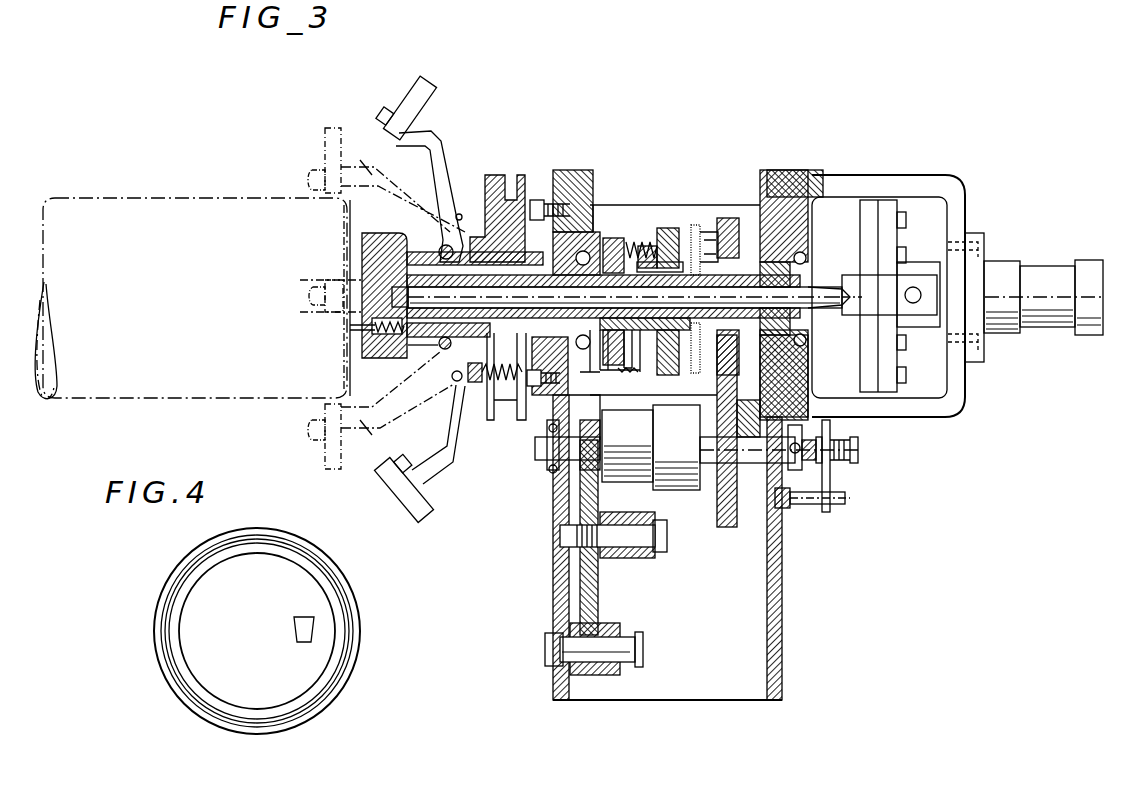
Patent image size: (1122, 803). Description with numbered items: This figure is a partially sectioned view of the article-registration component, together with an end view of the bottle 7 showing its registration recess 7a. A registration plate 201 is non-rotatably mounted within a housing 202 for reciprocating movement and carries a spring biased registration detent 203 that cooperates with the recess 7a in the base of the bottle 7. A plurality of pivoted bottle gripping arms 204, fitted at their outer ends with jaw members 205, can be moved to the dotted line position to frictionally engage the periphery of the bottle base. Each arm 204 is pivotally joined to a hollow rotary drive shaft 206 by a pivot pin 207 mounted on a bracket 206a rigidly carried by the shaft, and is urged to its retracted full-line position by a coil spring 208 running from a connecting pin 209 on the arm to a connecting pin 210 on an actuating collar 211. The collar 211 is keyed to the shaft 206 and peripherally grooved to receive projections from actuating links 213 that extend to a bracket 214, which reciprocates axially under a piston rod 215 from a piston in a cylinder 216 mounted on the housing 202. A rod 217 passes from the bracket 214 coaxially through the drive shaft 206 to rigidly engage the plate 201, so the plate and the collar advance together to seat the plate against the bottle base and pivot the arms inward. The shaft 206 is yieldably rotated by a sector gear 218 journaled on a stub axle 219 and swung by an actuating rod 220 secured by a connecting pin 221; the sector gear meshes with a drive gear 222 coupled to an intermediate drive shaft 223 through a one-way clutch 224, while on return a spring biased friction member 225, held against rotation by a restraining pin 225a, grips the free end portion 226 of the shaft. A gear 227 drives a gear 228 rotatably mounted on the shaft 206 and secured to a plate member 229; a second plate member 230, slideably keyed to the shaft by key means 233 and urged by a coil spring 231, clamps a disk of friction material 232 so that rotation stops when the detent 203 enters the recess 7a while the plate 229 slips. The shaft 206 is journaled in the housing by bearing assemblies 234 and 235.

In FIG. 3, the bottle 7 is at (138, 283).
In FIG. 4, the bottle 7 is at (165, 586).
In FIG. 4, the registration recess 7a is at (310, 628).
In FIG. 3, the registration plate 201 is at (365, 352).
In FIG. 3, the housing 202 is at (570, 170).
In FIG. 3, the registration detent 203 is at (350, 327).
In FIG. 3, the bottle gripping arms 204 is at (437, 482).
In FIG. 3, the jaw members 205 is at (325, 153).
In FIG. 3, the rotary drive shaft 206 is at (608, 240).
In FIG. 3, the bracket 206a is at (436, 350).
In FIG. 3, the pivot pin 207 is at (438, 248).
In FIG. 3, the coil spring 208 is at (478, 385).
In FIG. 3, the connecting pin 209 is at (452, 382).
In FIG. 3, the connecting pin 210 is at (521, 400).
In FIG. 3, the actuating collar 211 is at (498, 175).
In FIG. 3, the actuating links 213 is at (876, 309).
In FIG. 3, the bracket 214 is at (880, 210).
In FIG. 3, the piston rod 215 is at (948, 292).
In FIG. 3, the cylinder 216 is at (1055, 270).
In FIG. 3, the rod 217 is at (810, 290).
In FIG. 3, the sector gear 218 is at (590, 590).
In FIG. 3, the stub axle 219 is at (615, 645).
In FIG. 3, the actuating rod 220 is at (635, 558).
In FIG. 3, the connecting pin 221 is at (652, 538).
In FIG. 3, the drive gear 222 is at (590, 420).
In FIG. 3, the intermediate drive shaft 223 is at (745, 440).
In FIG. 3, the one-way clutch 224 is at (630, 438).
In FIG. 3, the friction member 225 is at (828, 476).
In FIG. 3, the restraining pin 225a is at (820, 508).
In FIG. 3, the free end portion 226 is at (826, 478).
In FIG. 3, the gear 227 is at (727, 527).
In FIG. 3, the gear 228 is at (730, 218).
In FIG. 3, the plate member 229 is at (710, 232).
In FIG. 3, the second plate member 230 is at (695, 225).
In FIG. 3, the coil spring 231 is at (620, 240).
In FIG. 3, the disk of friction material 232 is at (702, 365).
In FIG. 3, the key means 233 is at (650, 270).
In FIG. 3, the bearing assembly 234 is at (596, 238).
In FIG. 3, the bearing assembly 235 is at (806, 222).